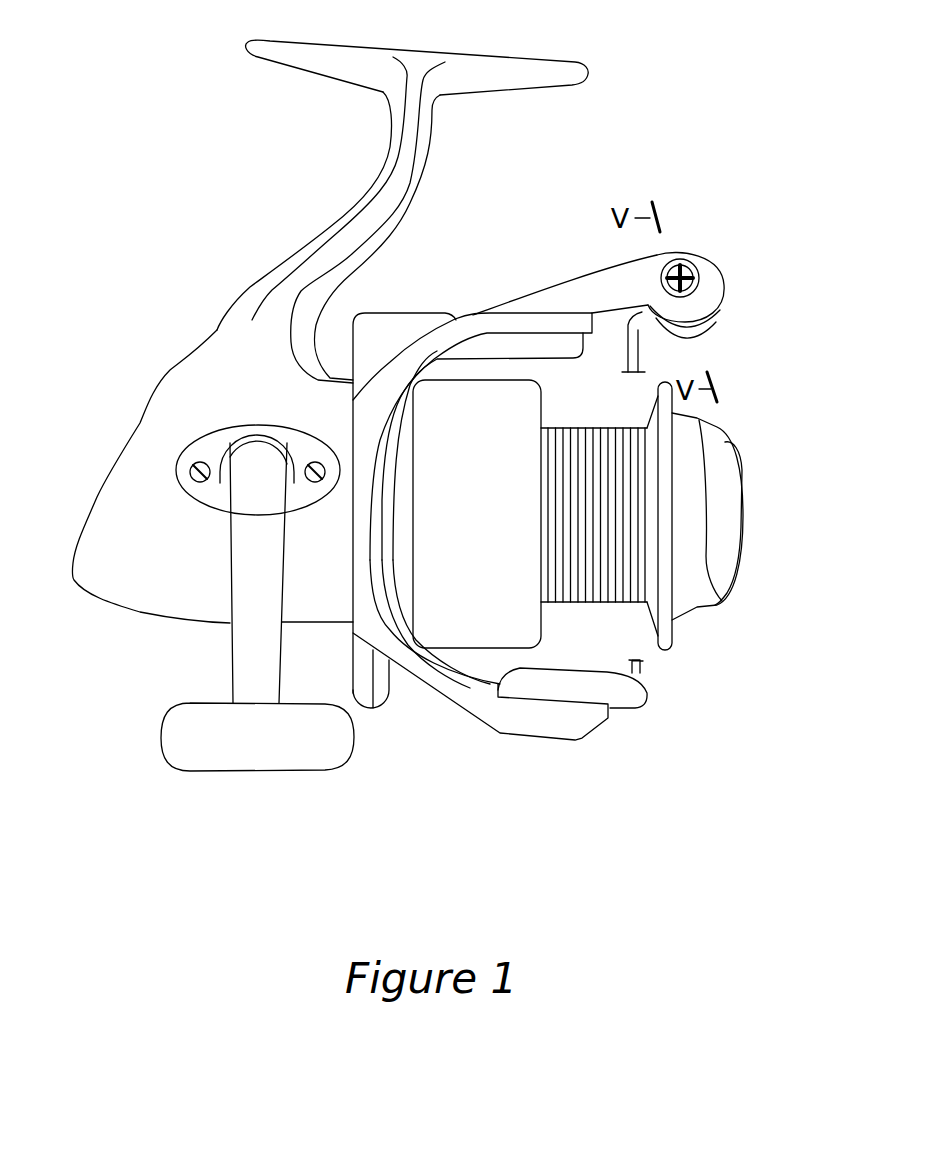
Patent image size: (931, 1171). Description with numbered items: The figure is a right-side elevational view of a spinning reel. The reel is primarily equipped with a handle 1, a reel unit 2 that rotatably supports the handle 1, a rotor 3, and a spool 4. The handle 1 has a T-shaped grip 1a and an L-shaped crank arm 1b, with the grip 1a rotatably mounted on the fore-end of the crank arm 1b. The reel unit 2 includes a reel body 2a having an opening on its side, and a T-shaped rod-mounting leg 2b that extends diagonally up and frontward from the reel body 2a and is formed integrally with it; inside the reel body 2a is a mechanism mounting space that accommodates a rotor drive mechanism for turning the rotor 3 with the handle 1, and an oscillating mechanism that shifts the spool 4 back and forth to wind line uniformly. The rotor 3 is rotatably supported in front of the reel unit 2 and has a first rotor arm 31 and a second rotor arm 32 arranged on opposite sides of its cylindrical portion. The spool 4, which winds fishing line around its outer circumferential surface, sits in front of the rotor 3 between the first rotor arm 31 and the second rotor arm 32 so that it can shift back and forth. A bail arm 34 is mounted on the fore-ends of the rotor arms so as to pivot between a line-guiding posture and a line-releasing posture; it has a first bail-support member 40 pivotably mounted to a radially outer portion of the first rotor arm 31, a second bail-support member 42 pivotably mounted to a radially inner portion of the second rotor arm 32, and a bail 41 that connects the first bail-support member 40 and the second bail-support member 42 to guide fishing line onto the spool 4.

The handle 1 is at (257, 634).
The grip 1a is at (262, 752).
The crank arm 1b is at (265, 652).
The reel unit 2 is at (330, 331).
The reel body 2a is at (153, 427).
The rod-mounting leg 2b is at (247, 287).
The rotor 3 is at (480, 495).
The first rotor arm 31 is at (518, 323).
The second rotor arm 32 is at (525, 720).
The bail arm 34 is at (740, 274).
The spool 4 is at (588, 420).
The first bail-support member 40 is at (578, 297).
The bail 41 is at (642, 338).
The second bail-support member 42 is at (627, 700).